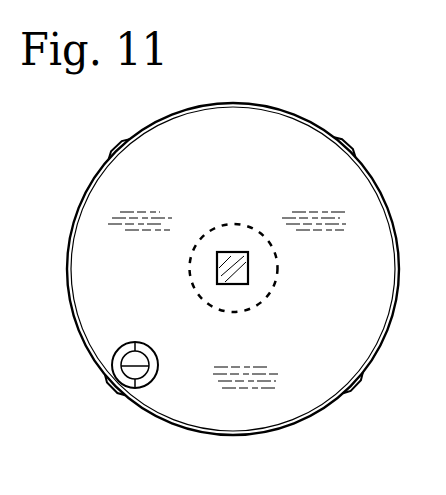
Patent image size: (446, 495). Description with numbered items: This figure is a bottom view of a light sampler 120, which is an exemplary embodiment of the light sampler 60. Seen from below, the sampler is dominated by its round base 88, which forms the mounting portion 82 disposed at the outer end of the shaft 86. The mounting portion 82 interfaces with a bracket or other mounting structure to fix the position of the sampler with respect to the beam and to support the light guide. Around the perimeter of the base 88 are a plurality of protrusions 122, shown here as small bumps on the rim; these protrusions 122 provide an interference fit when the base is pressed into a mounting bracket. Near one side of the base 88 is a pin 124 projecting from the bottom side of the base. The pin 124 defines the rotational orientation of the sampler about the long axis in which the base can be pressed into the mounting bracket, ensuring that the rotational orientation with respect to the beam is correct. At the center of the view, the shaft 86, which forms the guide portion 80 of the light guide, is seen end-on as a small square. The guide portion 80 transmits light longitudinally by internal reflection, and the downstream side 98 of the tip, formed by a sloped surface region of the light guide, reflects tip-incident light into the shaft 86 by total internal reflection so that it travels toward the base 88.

The light sampler 60 is at (285, 50).
The light sampler 120 is at (284, 83).
The protrusions 122 is at (115, 145).
The mounting portion 82 is at (60, 300).
The base 88 is at (78, 329).
The guide portion 80 is at (209, 257).
The shaft 86 is at (220, 275).
The downstream side 98 is at (244, 267).
The pin 124 is at (146, 346).